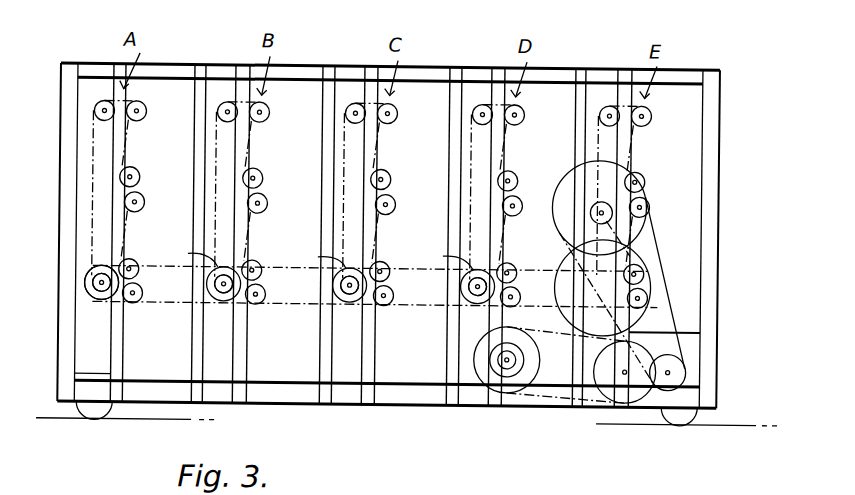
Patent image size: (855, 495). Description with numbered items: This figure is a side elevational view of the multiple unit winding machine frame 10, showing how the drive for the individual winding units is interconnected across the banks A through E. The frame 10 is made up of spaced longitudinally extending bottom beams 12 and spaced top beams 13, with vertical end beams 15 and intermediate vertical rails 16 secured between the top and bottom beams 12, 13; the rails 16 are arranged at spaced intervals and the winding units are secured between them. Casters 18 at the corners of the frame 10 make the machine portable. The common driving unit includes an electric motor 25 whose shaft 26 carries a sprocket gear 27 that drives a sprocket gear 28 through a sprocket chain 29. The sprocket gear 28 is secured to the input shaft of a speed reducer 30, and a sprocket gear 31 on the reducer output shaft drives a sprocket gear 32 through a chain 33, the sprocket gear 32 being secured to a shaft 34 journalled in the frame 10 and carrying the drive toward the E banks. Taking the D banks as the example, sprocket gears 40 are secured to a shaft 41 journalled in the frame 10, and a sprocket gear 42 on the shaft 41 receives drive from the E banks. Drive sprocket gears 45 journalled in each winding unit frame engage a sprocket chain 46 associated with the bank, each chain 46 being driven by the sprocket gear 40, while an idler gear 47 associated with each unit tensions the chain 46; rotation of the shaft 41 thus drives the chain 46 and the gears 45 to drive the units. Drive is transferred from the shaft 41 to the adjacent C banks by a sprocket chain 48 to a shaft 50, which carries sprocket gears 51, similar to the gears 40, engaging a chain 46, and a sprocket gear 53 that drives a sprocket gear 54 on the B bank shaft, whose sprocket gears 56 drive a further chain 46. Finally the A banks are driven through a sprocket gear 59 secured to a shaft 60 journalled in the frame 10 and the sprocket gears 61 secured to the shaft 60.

The frame 10 is at (426, 70).
The bottom beams 12 is at (412, 403).
The top beams 13 is at (302, 72).
The vertical end beams 15 is at (62, 176).
The intermediate vertical rails 16 is at (118, 358).
The casters 18 is at (98, 412).
The electric motor 25 is at (521, 340).
The shaft 26 is at (522, 351).
The sprocket gear 27 is at (524, 362).
The sprocket gear 28 is at (638, 398).
The sprocket chain 29 is at (561, 393).
The speed reducer 30 is at (692, 368).
The sprocket gear 31 is at (690, 364).
The sprocket gear 32 is at (570, 180).
The chain 33 is at (660, 254).
The shaft 34 is at (596, 211).
The sprocket gears 40 is at (480, 292).
The shaft 41 is at (465, 298).
The sprocket gear 42 is at (446, 256).
The drive sprocket gears 45 is at (144, 104).
The sprocket chain 46 is at (140, 138).
The idler gear 47 is at (104, 104).
The sprocket chain 48 is at (320, 256).
The shaft 50 is at (352, 292).
The sprocket gears 51 is at (337, 298).
The sprocket gear 53 is at (226, 292).
The sprocket gear 54 is at (191, 252).
The sprocket gears 56 is at (213, 290).
The sprocket gear 59 is at (88, 278).
The shaft 60 is at (103, 293).
The sprocket gears 61 is at (98, 284).